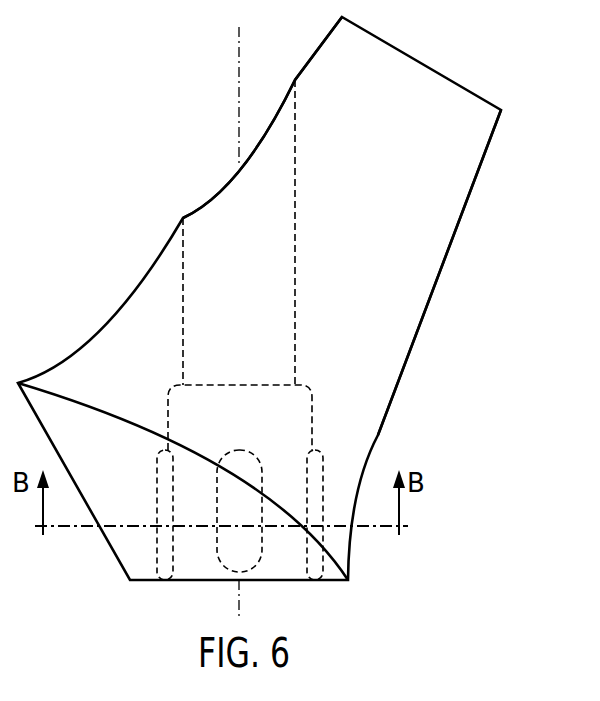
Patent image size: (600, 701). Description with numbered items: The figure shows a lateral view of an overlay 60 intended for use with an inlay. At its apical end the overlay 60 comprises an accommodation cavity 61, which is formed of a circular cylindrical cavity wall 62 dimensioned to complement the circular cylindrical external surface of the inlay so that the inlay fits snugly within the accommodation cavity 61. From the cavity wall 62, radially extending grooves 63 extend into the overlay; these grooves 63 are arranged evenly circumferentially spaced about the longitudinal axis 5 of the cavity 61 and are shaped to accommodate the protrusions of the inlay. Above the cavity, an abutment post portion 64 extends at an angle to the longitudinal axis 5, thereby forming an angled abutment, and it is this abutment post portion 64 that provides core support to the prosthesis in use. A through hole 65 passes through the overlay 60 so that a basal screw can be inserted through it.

The longitudinal axis 5 is at (239, 53).
The overlay 60 is at (462, 388).
The accommodation cavity 61 is at (310, 400).
The circular cylindrical cavity wall 62 is at (168, 418).
The grooves 63 is at (158, 498).
The abutment post portion 64 is at (466, 218).
The through hole 65 is at (220, 214).